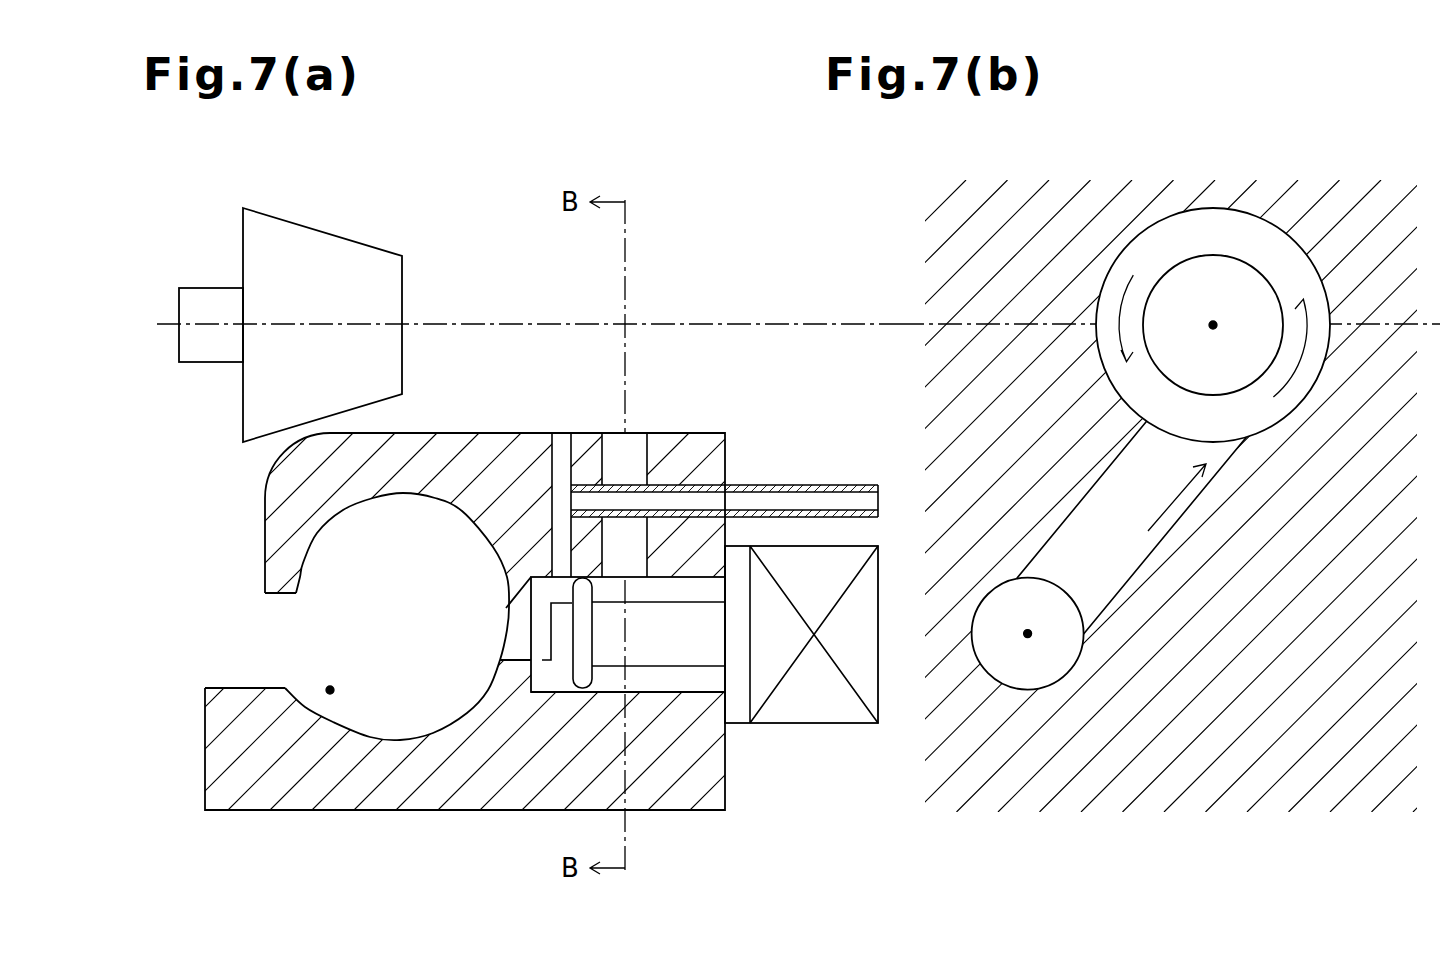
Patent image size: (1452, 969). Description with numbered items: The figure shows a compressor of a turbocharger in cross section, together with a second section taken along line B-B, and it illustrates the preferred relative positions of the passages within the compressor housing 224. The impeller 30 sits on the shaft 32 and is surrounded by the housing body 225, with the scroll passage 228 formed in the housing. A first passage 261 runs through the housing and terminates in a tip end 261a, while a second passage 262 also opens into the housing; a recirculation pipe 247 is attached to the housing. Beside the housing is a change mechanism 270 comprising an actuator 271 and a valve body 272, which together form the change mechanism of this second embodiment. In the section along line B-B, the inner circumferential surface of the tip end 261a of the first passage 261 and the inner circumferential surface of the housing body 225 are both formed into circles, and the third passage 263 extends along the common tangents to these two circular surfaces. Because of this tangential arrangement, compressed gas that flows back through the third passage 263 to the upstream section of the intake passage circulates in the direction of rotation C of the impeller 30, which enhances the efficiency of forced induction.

In FIG. 7A, the impeller 30 is at (403, 284).
In FIG. 7B, the impeller 30 is at (1224, 266).
In FIG. 7A, the shaft 32 is at (204, 288).
In FIG. 7A, the compressor housing 224 is at (208, 834).
In FIG. 7A, the housing body 225 is at (205, 731).
In FIG. 7B, the housing body 225 is at (1350, 199).
In FIG. 7A, the scroll passage 228 is at (330, 694).
In FIG. 7A, the recirculation pipe 247 is at (787, 484).
In FIG. 7A, the first passage 261 is at (508, 651).
In FIG. 7A, the tip end 261a is at (553, 682).
In FIG. 7B, the tip end 261a is at (1019, 678).
In FIG. 7A, the second passage 262 is at (562, 440).
In FIG. 7A, the third passage 263 is at (640, 440).
In FIG. 7B, the third passage 263 is at (1153, 548).
In FIG. 7A, the change mechanism 270 is at (737, 770).
In FIG. 7A, the actuator 271 is at (827, 710).
In FIG. 7A, the valve body 272 is at (662, 667).